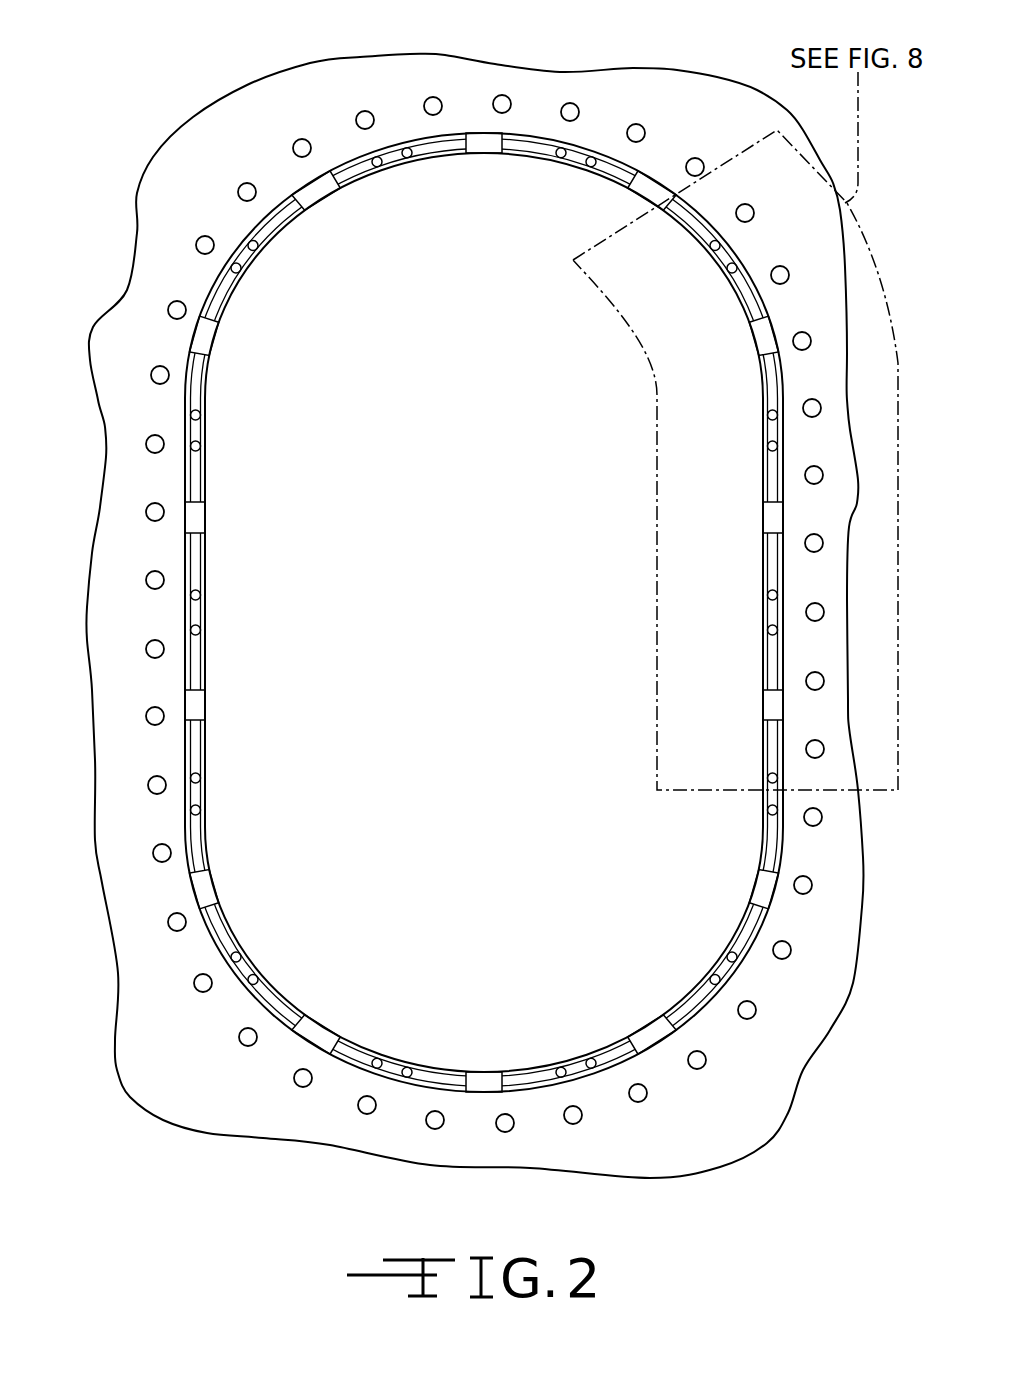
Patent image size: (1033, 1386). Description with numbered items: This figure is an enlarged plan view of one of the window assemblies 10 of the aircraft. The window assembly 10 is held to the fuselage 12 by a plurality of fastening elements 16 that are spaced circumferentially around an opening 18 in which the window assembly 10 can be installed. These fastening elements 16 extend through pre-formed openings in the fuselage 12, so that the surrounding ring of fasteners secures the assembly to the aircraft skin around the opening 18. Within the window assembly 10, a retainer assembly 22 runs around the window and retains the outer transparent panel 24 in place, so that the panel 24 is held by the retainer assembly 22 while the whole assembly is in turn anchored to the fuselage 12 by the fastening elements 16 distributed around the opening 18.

The window assembly 10 is at (453, 589).
The fuselage 12 is at (461, 600).
The fastening elements 16 is at (239, 188).
The opening 18 is at (484, 547).
The retainer assembly 22 is at (250, 283).
The outer transparent panel 24 is at (333, 768).